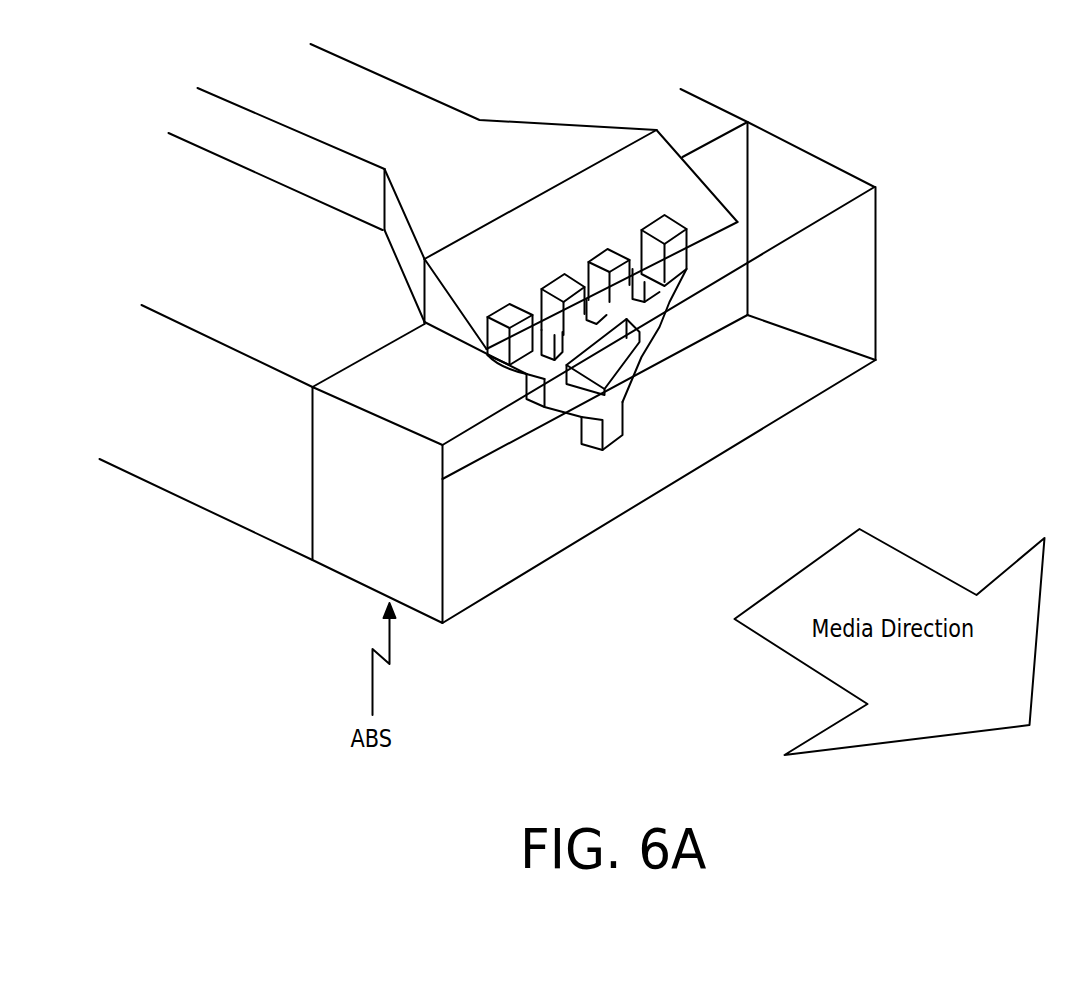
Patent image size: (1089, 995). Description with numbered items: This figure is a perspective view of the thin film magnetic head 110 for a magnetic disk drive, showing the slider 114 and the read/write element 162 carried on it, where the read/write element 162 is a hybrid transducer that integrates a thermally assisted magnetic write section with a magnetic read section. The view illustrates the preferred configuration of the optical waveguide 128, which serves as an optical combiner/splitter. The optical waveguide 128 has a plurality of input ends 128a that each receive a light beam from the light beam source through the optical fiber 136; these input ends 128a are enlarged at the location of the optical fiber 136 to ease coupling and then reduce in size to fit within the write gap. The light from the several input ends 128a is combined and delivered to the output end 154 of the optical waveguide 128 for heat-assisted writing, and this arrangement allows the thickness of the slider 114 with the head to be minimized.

The thin film magnetic head 110 is at (835, 85).
The slider 114 is at (207, 490).
The optical waveguide 128 is at (645, 352).
The input ends 128a is at (557, 281).
The optical fiber 136 is at (373, 102).
The output end 154 is at (617, 440).
The read/write element 162 is at (845, 270).